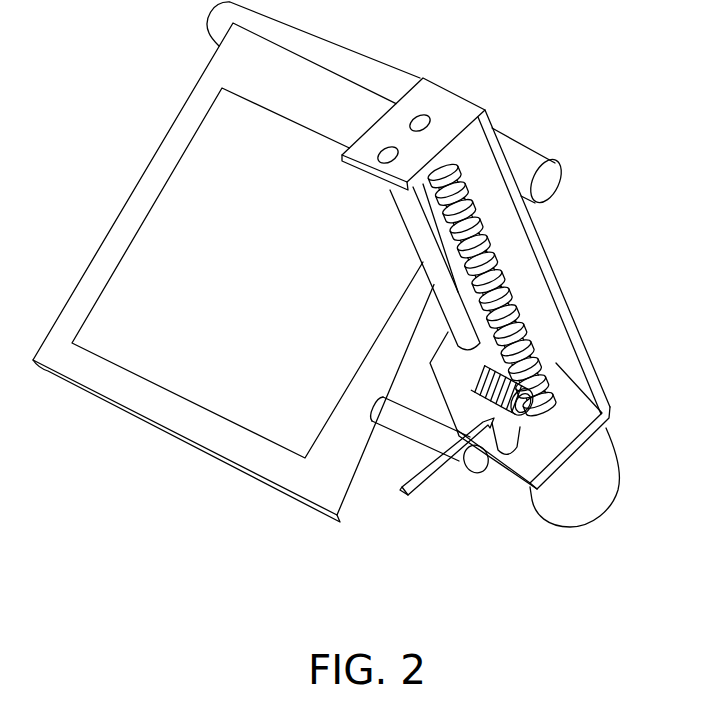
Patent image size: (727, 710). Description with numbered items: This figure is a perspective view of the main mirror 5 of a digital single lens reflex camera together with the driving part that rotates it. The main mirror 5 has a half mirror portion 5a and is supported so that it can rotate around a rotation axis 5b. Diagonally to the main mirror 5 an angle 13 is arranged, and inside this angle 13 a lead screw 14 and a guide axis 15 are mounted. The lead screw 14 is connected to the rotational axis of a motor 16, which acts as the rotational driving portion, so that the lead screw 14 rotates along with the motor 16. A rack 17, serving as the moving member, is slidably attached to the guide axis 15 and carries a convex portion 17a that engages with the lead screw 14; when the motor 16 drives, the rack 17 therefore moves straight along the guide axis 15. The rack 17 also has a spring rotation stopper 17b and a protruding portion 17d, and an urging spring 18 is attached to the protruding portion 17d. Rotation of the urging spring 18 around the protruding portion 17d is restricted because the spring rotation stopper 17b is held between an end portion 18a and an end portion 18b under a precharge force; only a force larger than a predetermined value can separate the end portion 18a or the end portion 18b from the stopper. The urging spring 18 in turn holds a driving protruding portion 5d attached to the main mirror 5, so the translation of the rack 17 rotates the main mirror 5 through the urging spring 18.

The main mirror 5 is at (203, 72).
The half mirror portion 5a is at (193, 187).
The rotation axis 5b is at (547, 178).
The driving protruding portion 5d is at (473, 465).
The angle 13 is at (565, 298).
The lead screw 14 is at (498, 262).
The guide axis 15 is at (425, 235).
The motor 16 is at (593, 518).
The rack 17 is at (488, 352).
The convex portion 17a is at (508, 340).
The spring rotation stopper 17b is at (490, 442).
The protruding portion 17d is at (523, 407).
The urging spring 18 is at (545, 438).
The end portion 18a is at (420, 473).
The end portion 18b is at (390, 473).